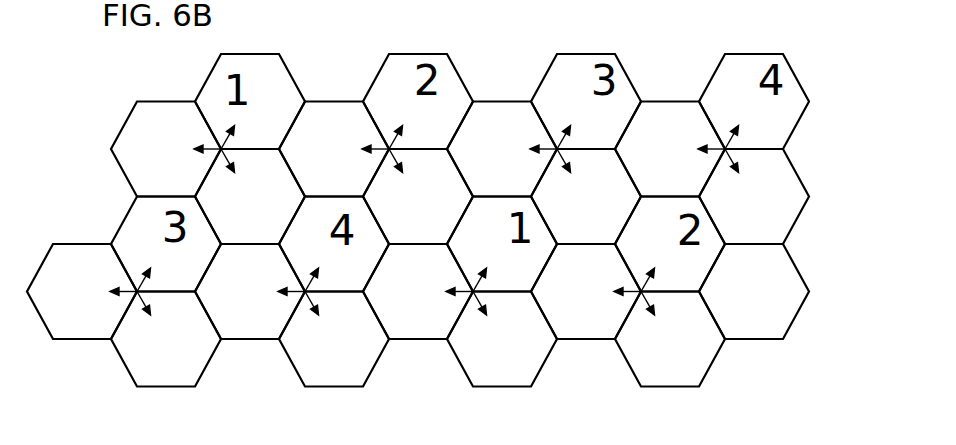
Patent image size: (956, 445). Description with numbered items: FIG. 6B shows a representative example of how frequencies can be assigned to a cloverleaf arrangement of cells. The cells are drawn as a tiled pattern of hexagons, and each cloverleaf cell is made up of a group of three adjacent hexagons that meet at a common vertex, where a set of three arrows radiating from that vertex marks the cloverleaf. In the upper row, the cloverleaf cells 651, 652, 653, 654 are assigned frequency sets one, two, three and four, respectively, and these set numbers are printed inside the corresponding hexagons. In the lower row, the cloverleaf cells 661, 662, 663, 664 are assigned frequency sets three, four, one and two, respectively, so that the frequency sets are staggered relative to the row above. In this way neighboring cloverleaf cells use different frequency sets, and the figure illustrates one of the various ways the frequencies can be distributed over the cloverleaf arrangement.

The cloverleaf cell 651 is at (288, 68).
The cloverleaf cell 652 is at (452, 75).
The cloverleaf cell 653 is at (632, 83).
The cloverleaf cell 654 is at (793, 73).
The cloverleaf cell 661 is at (200, 372).
The cloverleaf cell 662 is at (367, 372).
The cloverleaf cell 663 is at (533, 372).
The cloverleaf cell 664 is at (710, 367).